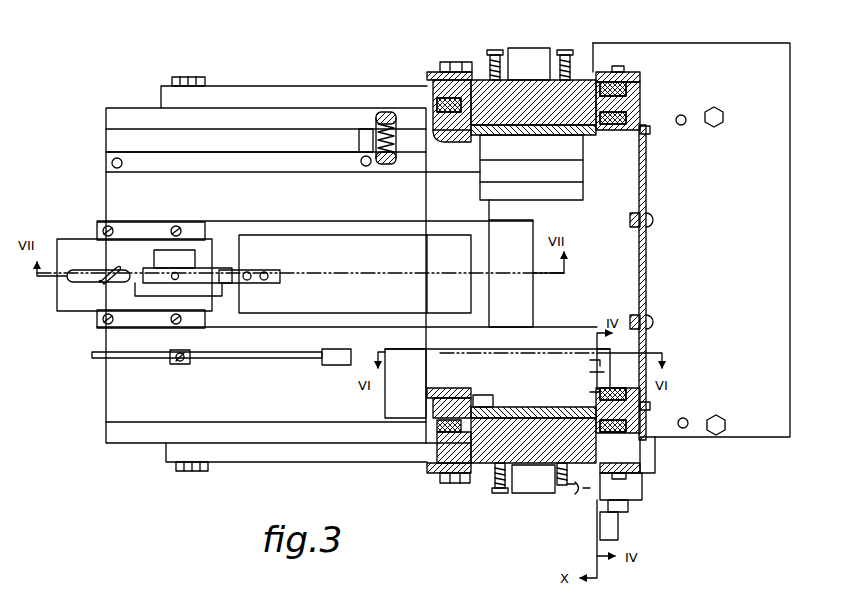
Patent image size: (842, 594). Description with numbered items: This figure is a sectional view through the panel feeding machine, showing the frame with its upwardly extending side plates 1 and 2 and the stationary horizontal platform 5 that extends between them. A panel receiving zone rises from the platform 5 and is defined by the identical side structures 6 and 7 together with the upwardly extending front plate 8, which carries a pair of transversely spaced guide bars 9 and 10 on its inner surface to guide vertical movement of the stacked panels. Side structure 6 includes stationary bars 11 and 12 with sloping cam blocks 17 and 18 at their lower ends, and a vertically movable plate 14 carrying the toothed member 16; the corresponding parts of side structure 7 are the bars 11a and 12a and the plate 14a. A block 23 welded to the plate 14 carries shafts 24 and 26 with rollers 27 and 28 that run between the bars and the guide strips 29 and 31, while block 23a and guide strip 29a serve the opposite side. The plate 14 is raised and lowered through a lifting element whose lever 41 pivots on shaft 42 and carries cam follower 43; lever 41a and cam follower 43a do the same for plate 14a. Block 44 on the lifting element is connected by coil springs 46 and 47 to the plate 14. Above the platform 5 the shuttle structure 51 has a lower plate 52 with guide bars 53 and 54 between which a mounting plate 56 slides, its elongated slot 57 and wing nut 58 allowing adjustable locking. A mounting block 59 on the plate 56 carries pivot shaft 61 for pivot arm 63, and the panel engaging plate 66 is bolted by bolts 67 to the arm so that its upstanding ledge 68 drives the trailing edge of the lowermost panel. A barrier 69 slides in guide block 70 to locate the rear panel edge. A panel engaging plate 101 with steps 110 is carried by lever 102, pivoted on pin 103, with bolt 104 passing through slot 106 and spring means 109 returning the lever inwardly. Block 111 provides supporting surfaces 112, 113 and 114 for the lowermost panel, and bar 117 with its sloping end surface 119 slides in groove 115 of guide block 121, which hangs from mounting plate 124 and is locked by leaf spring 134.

The side plate 1 is at (313, 445).
The side plate 2 is at (272, 118).
The lever 41 is at (262, 464).
The lever 41a is at (305, 88).
The shaft 42 is at (190, 472).
The platform 5 is at (346, 200).
The side structure 6 is at (470, 495).
The side structure 7 is at (590, 60).
The front plate 8 is at (647, 275).
The guide bar 9 is at (630, 320).
The guide bar 10 is at (630, 219).
The bar 11 is at (645, 402).
The bar 11a is at (628, 134).
The bar 12 is at (440, 398).
The bar 12a is at (420, 130).
The vertically movable plate 14 is at (512, 410).
The vertically movable plate 14a is at (537, 131).
The toothed member 16 is at (478, 395).
The cam block 17 is at (606, 382).
The cam block 18 is at (457, 383).
The block 23 is at (530, 470).
The block 23a is at (510, 80).
The shaft 24 is at (656, 455).
The shaft 26 is at (440, 448).
The roller 27 is at (645, 470).
The roller 28 is at (440, 427).
The guide strip 29 is at (644, 490).
The guide strip 29a is at (630, 72).
The guide strip 31 is at (440, 472).
The cam follower 43 is at (470, 484).
The cam follower 43a is at (465, 68).
The block 44 is at (536, 492).
The coil spring 46 is at (578, 494).
The coil spring 47 is at (500, 492).
The shuttle structure 51 is at (545, 297).
The lower plate 52 is at (524, 314).
The guide bar 53 is at (168, 322).
The guide bar 54 is at (148, 222).
The mounting plate 56 is at (82, 243).
The elongated slot 57 is at (78, 278).
The wing nut 58 is at (118, 270).
The mounting block 59 is at (178, 252).
The pivot shaft 61 is at (160, 288).
The pivot arm 63 is at (218, 270).
The panel engaging plate 66 is at (296, 236).
The bolt 67 is at (250, 281).
The ledge 68 is at (426, 258).
The barrier 69 is at (325, 362).
The guide block 70 is at (186, 366).
The panel engaging plate 101 is at (490, 180).
The lever 102 is at (203, 166).
The pivot pin 103 is at (112, 163).
The bolt 104 is at (369, 166).
The slot 106 is at (359, 140).
The spring means 109 is at (378, 120).
The steps 110 is at (516, 196).
The block 111 is at (504, 354).
The supporting surface 112 is at (590, 372).
The supporting surface 113 is at (590, 360).
The supporting surface 114 is at (402, 351).
The groove 115 is at (582, 403).
The bar 117 is at (618, 524).
The end surface 119 is at (590, 392).
The guide block 121 is at (636, 512).
The mounting plate 124 is at (630, 508).
The leaf spring 134 is at (652, 420).